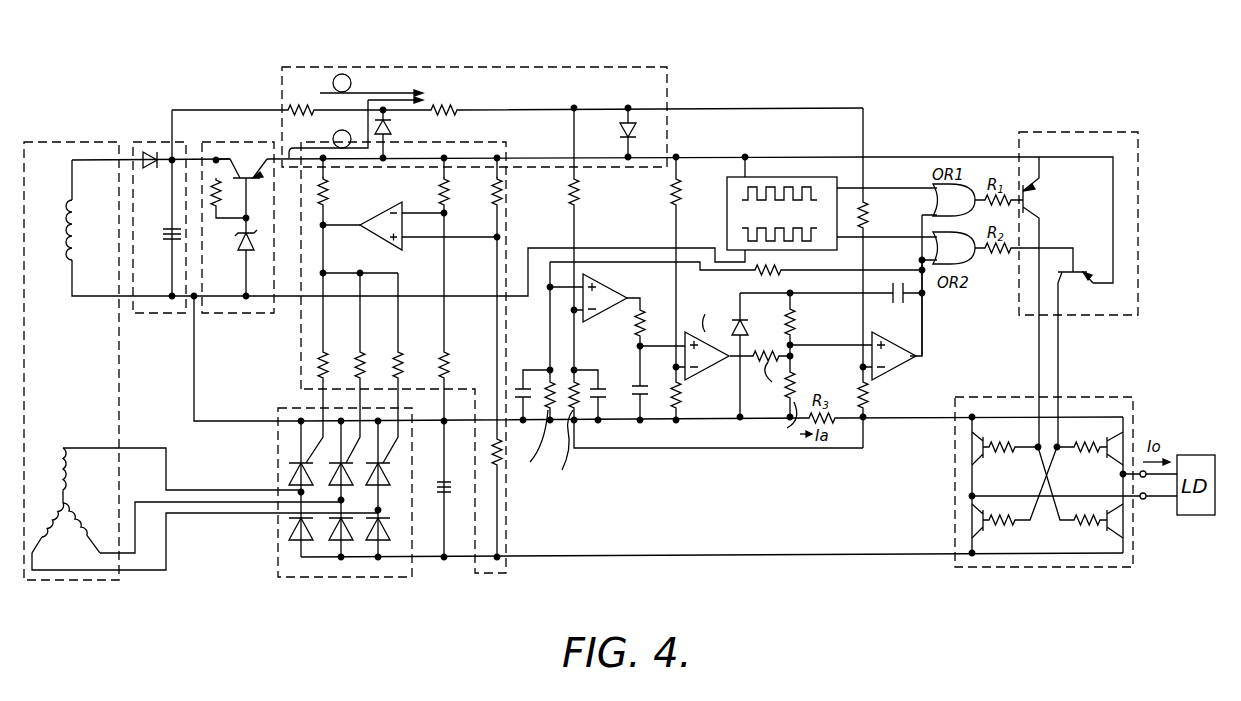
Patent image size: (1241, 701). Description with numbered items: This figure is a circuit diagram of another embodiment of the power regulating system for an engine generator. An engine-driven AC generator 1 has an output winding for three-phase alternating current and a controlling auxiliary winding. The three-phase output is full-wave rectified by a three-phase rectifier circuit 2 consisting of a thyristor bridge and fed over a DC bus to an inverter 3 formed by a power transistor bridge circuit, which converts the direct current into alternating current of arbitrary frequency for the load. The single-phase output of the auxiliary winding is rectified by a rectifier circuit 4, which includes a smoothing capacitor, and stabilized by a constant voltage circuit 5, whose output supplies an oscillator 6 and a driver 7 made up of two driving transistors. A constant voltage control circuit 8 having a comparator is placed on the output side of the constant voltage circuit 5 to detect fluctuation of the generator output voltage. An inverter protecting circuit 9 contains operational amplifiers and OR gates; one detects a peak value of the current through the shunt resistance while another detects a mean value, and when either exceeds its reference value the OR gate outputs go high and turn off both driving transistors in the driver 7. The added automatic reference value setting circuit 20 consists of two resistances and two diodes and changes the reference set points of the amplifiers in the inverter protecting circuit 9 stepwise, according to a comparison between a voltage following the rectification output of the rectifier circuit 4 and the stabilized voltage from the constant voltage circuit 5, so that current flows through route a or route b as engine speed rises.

The AC generator 1 is at (81, 142).
The three-phase rectifier circuit 2 is at (278, 548).
The inverter 3 is at (1093, 397).
The rectifier circuit 4 is at (155, 142).
The constant voltage circuit 5 is at (240, 142).
The oscillator 6 is at (800, 177).
The driver 7 is at (1075, 132).
The constant voltage control circuit 8 is at (301, 355).
The inverter protecting circuit 9 is at (717, 448).
The automatic reference value setting circuit 20 is at (390, 67).